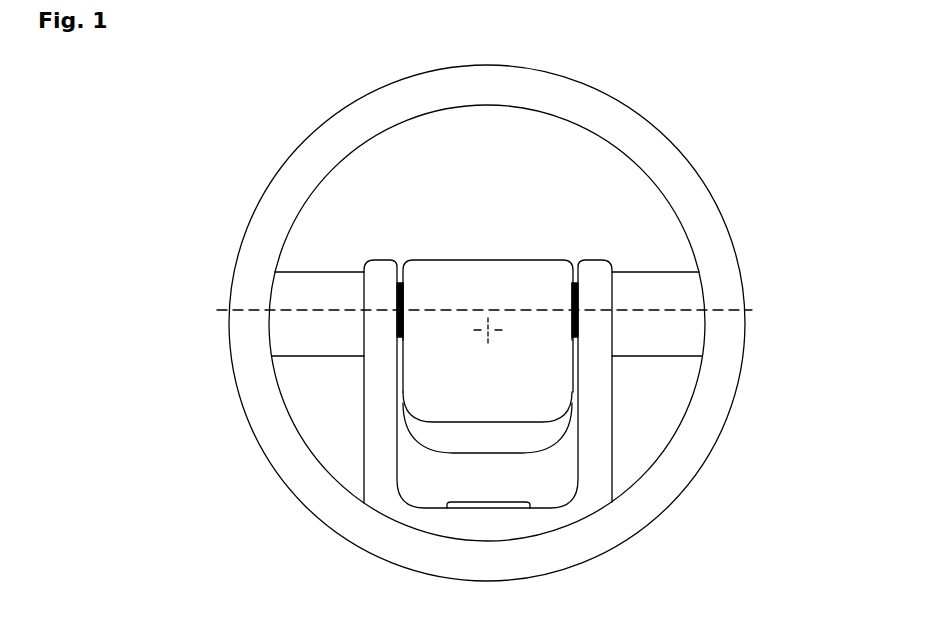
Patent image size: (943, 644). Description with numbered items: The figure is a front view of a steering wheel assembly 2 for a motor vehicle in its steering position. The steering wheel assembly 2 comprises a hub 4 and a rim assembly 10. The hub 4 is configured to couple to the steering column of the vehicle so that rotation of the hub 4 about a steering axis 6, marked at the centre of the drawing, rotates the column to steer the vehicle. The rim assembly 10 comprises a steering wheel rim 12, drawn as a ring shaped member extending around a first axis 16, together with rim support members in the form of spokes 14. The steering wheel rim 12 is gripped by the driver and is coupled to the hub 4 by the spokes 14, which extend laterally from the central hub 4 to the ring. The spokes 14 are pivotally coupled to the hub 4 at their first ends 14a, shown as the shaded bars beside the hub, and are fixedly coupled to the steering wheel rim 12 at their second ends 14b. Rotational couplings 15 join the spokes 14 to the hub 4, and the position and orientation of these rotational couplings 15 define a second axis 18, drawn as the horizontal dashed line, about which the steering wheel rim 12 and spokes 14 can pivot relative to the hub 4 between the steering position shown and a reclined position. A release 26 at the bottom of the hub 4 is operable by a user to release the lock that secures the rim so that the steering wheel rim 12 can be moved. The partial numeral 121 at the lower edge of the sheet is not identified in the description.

The steering wheel assembly 2 is at (732, 95).
The rim assembly 10 is at (745, 197).
The steering wheel rim 12 is at (728, 385).
The second axis 18 is at (218, 312).
The spokes 14 is at (296, 290).
The first ends of the spokes 14a is at (400, 283).
The second ends of the spokes 14b is at (273, 341).
The hub 4 is at (492, 268).
The rotational couplings 15 is at (405, 298).
The release 26 is at (498, 508).
The steering axis 6 is at (494, 333).
The first axis 16 is at (488, 332).
The bottom element 121 is at (388, 632).